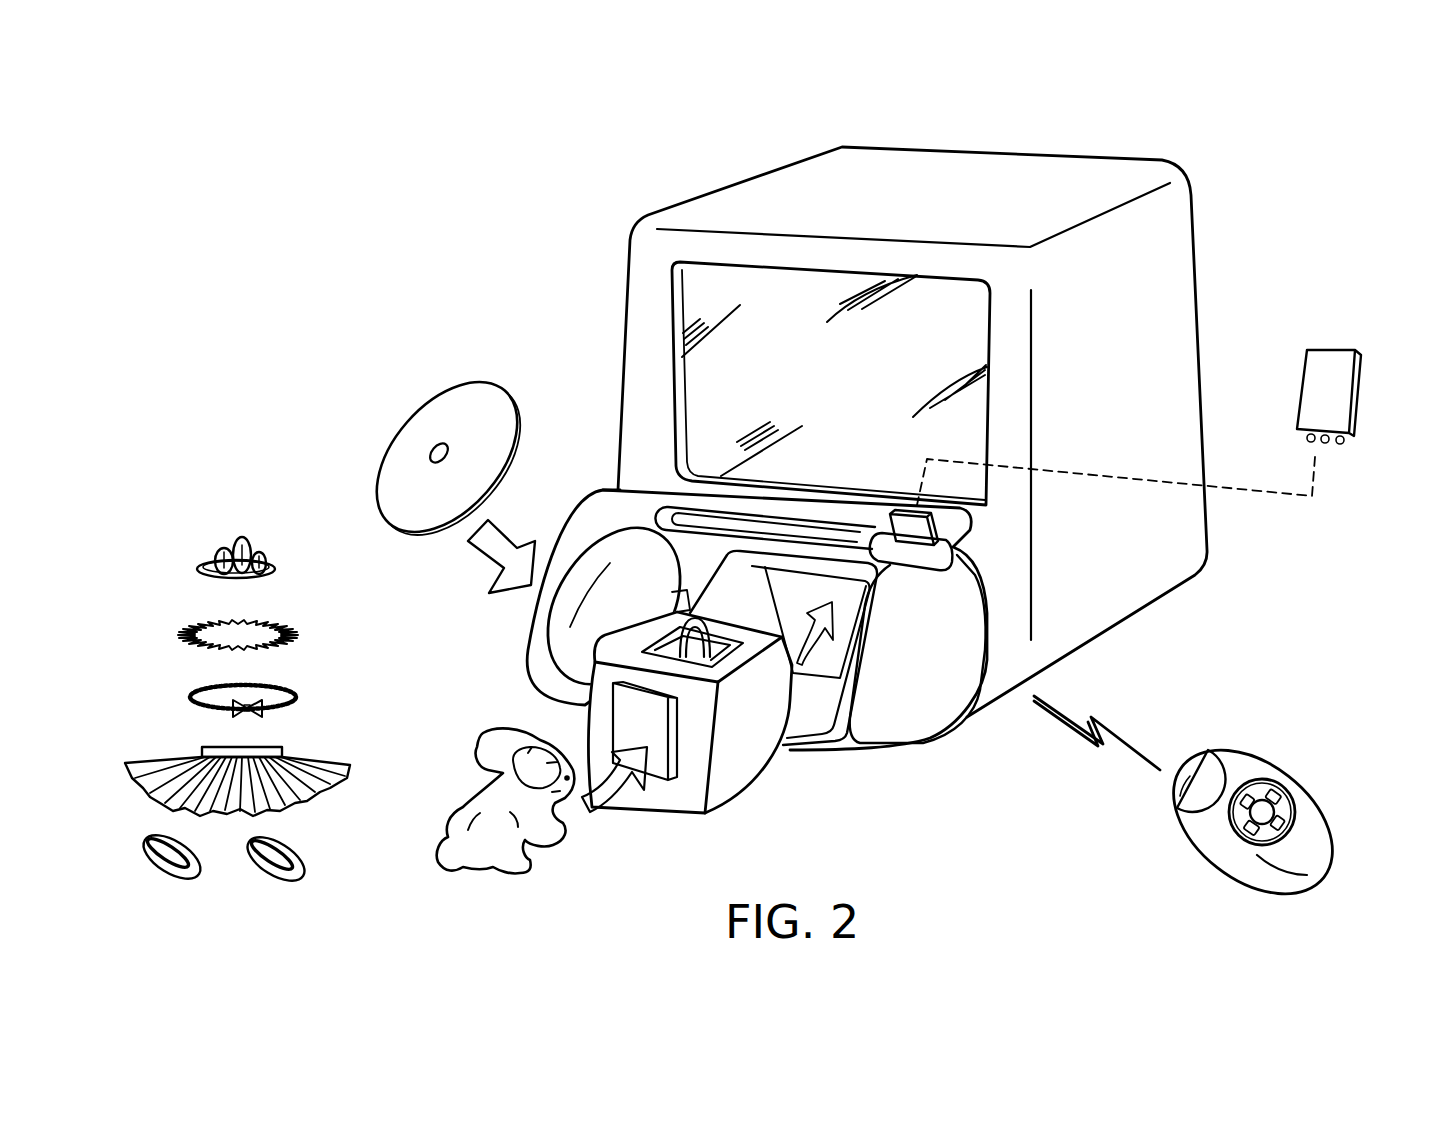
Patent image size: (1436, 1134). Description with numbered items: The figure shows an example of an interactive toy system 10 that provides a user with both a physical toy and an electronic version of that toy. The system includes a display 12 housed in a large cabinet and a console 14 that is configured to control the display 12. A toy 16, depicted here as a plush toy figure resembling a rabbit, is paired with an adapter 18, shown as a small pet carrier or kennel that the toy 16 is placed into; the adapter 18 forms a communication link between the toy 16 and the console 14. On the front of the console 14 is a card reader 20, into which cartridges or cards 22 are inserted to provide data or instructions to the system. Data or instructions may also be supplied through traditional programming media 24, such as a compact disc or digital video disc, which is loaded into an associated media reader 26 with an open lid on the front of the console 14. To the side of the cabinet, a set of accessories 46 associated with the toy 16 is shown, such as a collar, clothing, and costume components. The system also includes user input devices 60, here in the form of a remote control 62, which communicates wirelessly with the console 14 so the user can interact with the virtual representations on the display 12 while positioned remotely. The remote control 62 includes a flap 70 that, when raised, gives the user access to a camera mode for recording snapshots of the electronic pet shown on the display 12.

The interactive toy system 10 is at (367, 172).
The display 12 is at (1128, 142).
The console 14 is at (900, 762).
The toy 16 is at (548, 850).
The adapter 18 is at (747, 792).
The card reader 20 is at (962, 537).
The cartridges or cards 22 is at (1367, 385).
The programming media 24 is at (413, 405).
The media reader 26 is at (618, 540).
The accessories 46 is at (157, 683).
The user input devices 60 is at (1257, 750).
The remote control 62 is at (1315, 843).
The flap 70 is at (1193, 765).